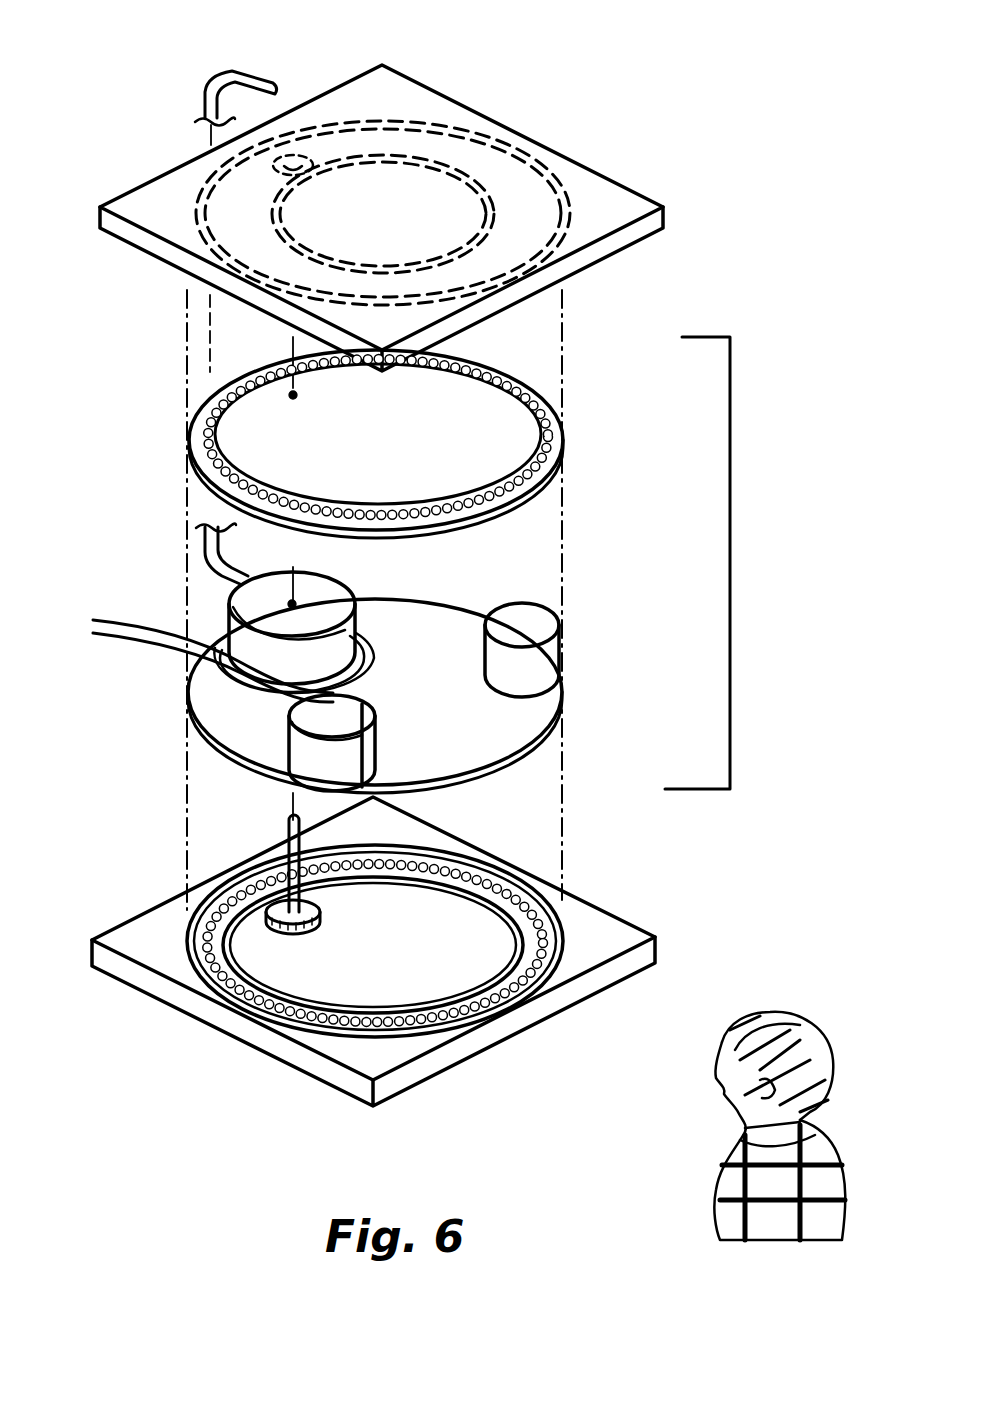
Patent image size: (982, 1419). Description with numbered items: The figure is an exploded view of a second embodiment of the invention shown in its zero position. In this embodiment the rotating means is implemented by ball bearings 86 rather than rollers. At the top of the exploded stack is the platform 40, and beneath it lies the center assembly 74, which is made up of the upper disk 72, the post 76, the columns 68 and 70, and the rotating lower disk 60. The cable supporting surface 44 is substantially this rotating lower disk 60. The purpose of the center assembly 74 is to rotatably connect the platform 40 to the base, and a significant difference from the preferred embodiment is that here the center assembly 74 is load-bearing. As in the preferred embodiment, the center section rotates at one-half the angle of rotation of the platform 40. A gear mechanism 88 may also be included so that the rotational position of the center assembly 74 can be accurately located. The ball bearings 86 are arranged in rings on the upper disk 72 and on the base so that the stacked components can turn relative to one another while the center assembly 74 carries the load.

The platform 40 is at (168, 253).
The cable supporting surface 44 is at (587, 927).
The lower disk 60 is at (190, 727).
The column 68 is at (535, 660).
The column 70 is at (320, 758).
The upper disk 72 is at (562, 416).
The center assembly 74 is at (737, 550).
The post 76 is at (320, 607).
The ball bearings 86 is at (193, 422).
The gear mechanism 88 is at (307, 142).